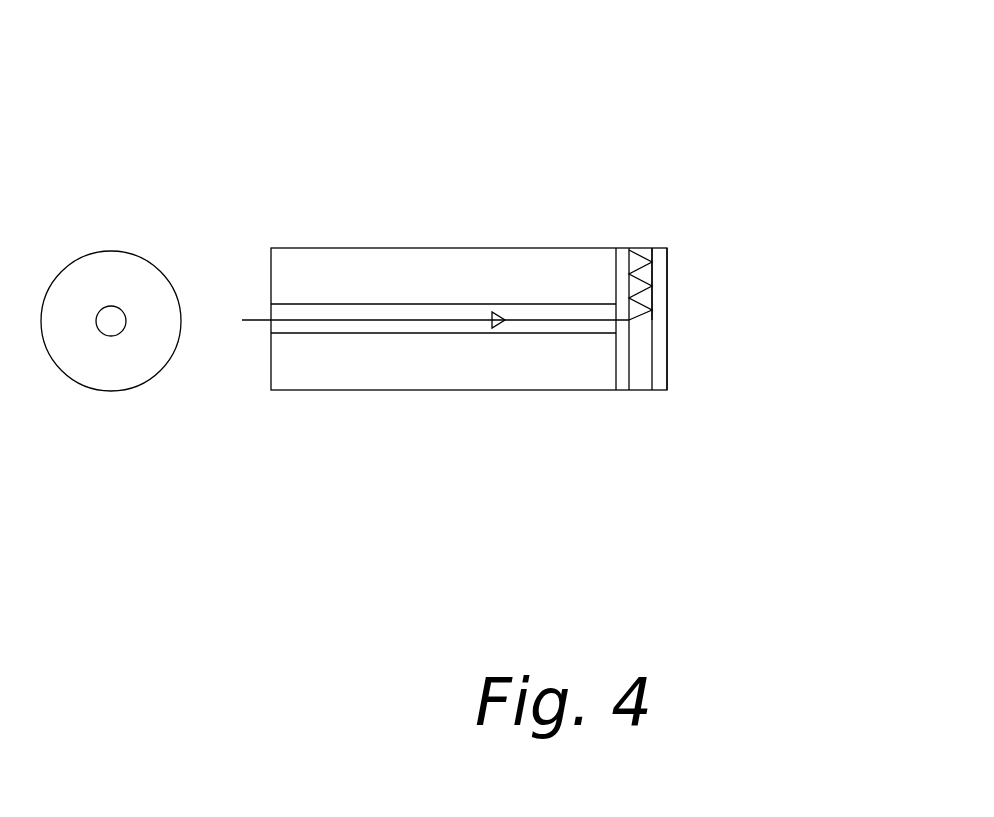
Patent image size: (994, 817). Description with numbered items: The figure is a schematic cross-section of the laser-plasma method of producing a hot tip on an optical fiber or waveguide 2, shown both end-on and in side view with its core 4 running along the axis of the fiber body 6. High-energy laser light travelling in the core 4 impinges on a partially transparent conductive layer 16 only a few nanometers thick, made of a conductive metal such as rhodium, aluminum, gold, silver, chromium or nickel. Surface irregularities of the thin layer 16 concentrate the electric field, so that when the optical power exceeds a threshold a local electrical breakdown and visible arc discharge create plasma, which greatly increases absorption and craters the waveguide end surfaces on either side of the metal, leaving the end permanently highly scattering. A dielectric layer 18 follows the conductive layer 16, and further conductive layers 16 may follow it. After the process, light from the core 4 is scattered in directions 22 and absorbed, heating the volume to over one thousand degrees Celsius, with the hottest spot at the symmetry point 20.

The optical assembly 2 is at (528, 158).
The core 4 is at (111, 320).
The ferrule 6 is at (147, 303).
The partially transparent conductive layer 16 is at (623, 380).
The dielectric layer 18 is at (644, 248).
The symmetry point 20 is at (668, 320).
The directions 22 is at (634, 255).